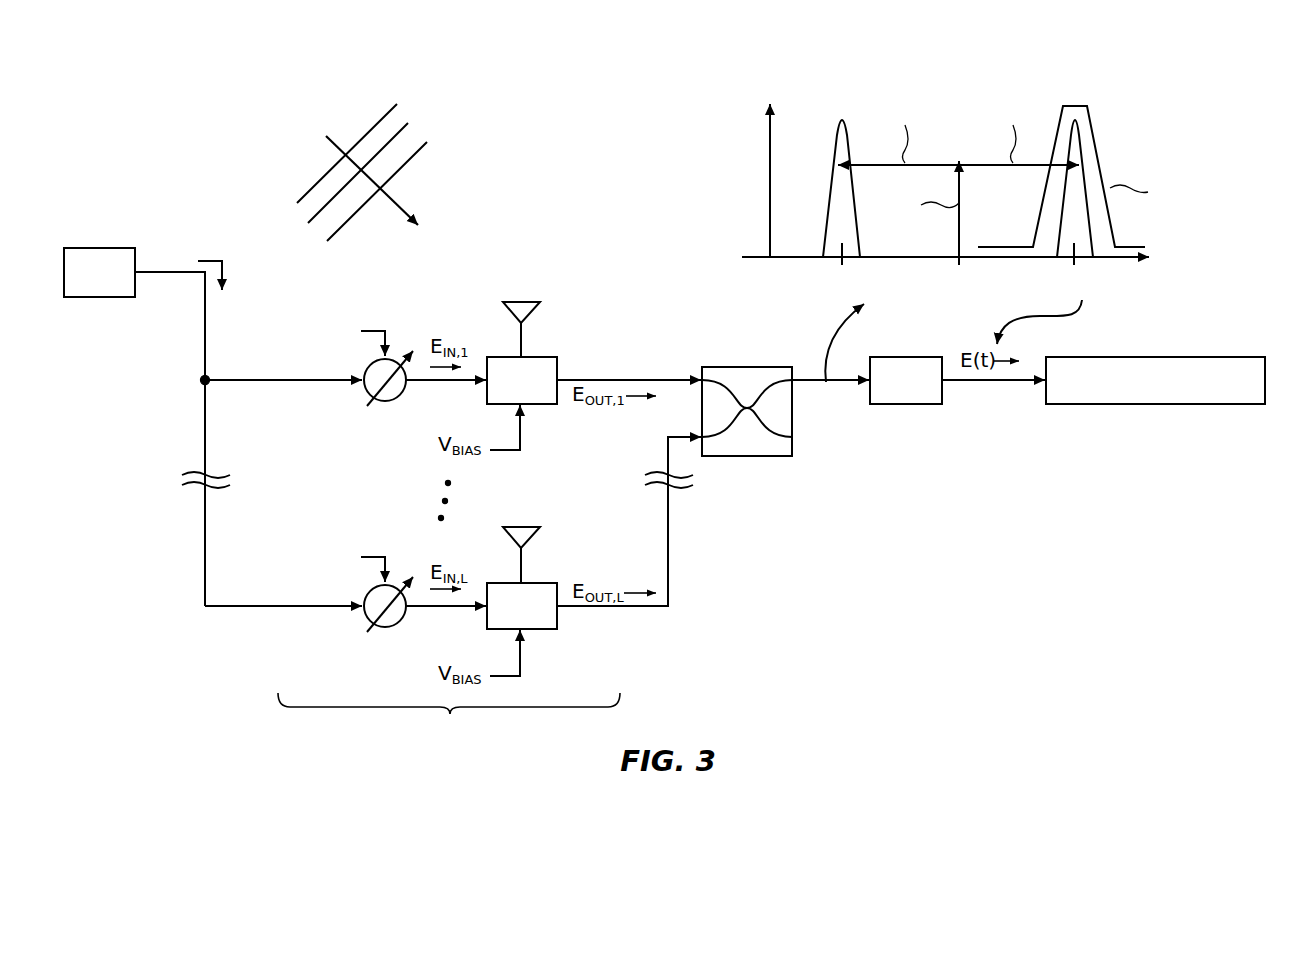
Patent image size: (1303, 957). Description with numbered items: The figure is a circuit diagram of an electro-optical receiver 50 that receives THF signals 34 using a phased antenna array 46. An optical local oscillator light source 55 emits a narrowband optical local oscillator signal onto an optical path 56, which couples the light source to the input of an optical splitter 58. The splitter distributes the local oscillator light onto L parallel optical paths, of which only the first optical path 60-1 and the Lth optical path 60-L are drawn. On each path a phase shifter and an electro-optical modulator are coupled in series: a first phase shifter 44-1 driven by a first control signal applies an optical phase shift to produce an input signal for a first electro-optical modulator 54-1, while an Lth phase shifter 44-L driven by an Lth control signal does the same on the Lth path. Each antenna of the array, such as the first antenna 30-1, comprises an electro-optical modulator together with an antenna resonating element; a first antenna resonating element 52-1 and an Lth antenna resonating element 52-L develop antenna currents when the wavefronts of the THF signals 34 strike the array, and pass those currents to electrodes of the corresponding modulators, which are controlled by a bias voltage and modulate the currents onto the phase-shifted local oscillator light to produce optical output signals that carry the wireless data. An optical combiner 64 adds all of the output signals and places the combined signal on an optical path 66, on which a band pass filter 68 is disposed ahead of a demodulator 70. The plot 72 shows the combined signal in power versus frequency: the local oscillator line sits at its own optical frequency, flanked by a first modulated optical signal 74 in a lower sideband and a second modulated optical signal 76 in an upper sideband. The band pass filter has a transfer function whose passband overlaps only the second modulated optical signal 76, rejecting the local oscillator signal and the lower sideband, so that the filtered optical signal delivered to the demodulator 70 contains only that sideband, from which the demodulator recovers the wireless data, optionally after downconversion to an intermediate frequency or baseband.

The receiver 50 is at (112, 98).
The optical local oscillator light source 55 is at (102, 248).
The THF signals 34 is at (405, 207).
The optical path 56 is at (205, 333).
The optical splitter 58 is at (205, 381).
The first optical path 60-1 is at (265, 378).
The Lth optical path 60-L is at (255, 604).
The first phase shifter 44-1 is at (345, 405).
The Lth phase shifter 44-L is at (345, 632).
The first antenna resonating element 52-1 is at (521, 300).
The Lth antenna resonating element 52-L is at (521, 525).
The first antenna 30-1 is at (560, 298).
The first electro-optical modulator 54-1 is at (548, 360).
The phased antenna array 46 is at (449, 717).
The optical combiner 64 is at (748, 457).
The optical path 66 is at (829, 384).
The band pass filter 68 is at (905, 405).
The demodulator 70 is at (1158, 405).
The plot 72 is at (1107, 103).
The first modulated optical signal 74 is at (846, 98).
The second modulated optical signal 76 is at (1088, 160).